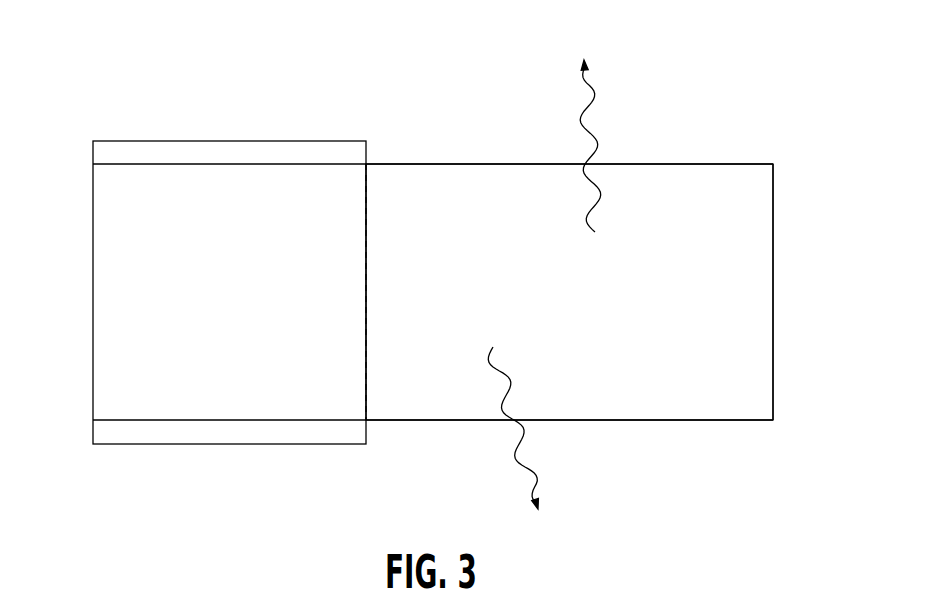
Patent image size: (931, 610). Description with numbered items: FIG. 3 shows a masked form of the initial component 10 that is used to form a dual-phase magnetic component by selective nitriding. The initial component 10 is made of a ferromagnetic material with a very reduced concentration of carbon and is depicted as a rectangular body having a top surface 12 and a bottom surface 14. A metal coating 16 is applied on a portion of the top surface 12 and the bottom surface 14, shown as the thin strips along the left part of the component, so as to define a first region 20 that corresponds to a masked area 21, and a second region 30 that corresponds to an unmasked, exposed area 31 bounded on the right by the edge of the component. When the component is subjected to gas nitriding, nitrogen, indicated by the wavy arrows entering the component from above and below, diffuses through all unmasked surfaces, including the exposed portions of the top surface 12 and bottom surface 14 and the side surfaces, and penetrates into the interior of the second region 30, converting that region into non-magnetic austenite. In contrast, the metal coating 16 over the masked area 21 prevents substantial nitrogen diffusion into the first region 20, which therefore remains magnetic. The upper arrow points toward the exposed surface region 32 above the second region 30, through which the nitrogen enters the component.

The optical element 10 is at (679, 105).
The first major surface 12 is at (409, 156).
The second major surface 14 is at (402, 426).
The coating layer 16 is at (293, 152).
The cover portion 20 is at (158, 141).
The boundary region 21 is at (172, 265).
The second side 30 is at (598, 421).
The edge surface 31 is at (745, 297).
The first side 32 is at (503, 117).